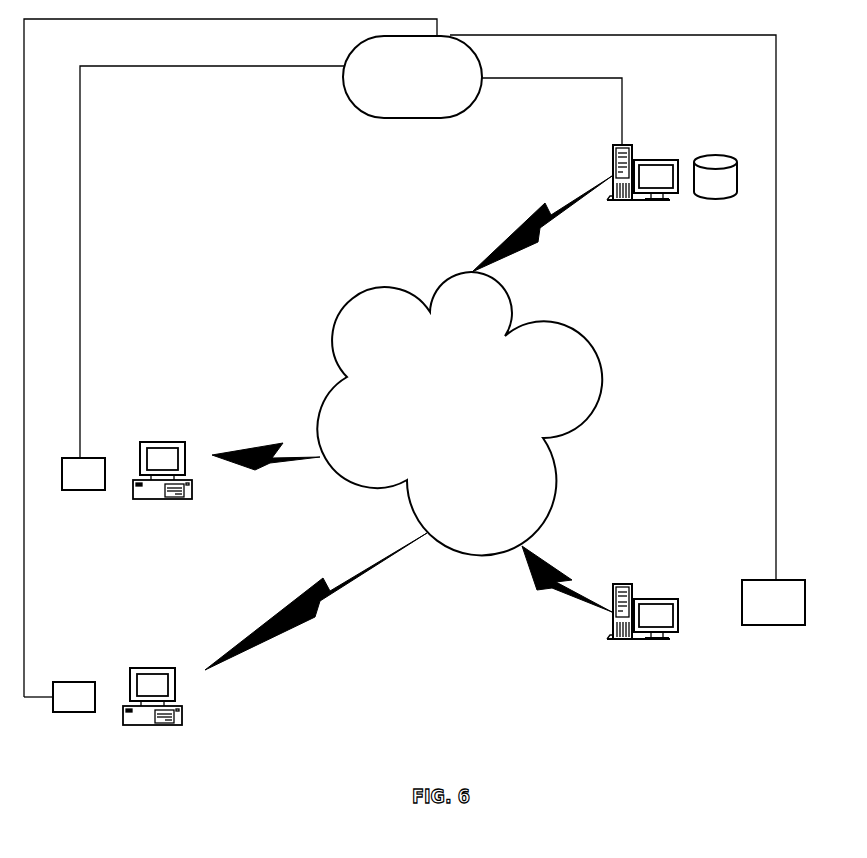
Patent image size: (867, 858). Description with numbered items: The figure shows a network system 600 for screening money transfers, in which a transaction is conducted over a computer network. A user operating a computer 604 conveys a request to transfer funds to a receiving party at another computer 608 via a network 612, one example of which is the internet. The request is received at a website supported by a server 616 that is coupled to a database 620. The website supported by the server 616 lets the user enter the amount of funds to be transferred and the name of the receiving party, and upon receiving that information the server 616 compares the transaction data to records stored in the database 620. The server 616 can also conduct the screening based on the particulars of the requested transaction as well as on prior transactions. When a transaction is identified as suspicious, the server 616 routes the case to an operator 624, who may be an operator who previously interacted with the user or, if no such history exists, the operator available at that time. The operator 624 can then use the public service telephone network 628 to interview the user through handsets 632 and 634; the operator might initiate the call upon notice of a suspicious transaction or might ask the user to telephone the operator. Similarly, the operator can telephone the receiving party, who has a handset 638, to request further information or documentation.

The system 600 is at (617, 767).
The computer 604 is at (165, 442).
The computer 608 is at (152, 668).
The network 612 is at (459, 413).
The server 616 is at (623, 145).
The database 620 is at (720, 153).
The operator 624 is at (655, 598).
The public service telephone network 628 is at (412, 118).
The handset 632 is at (763, 625).
The handset 634 is at (83, 490).
The handset 638 is at (78, 712).